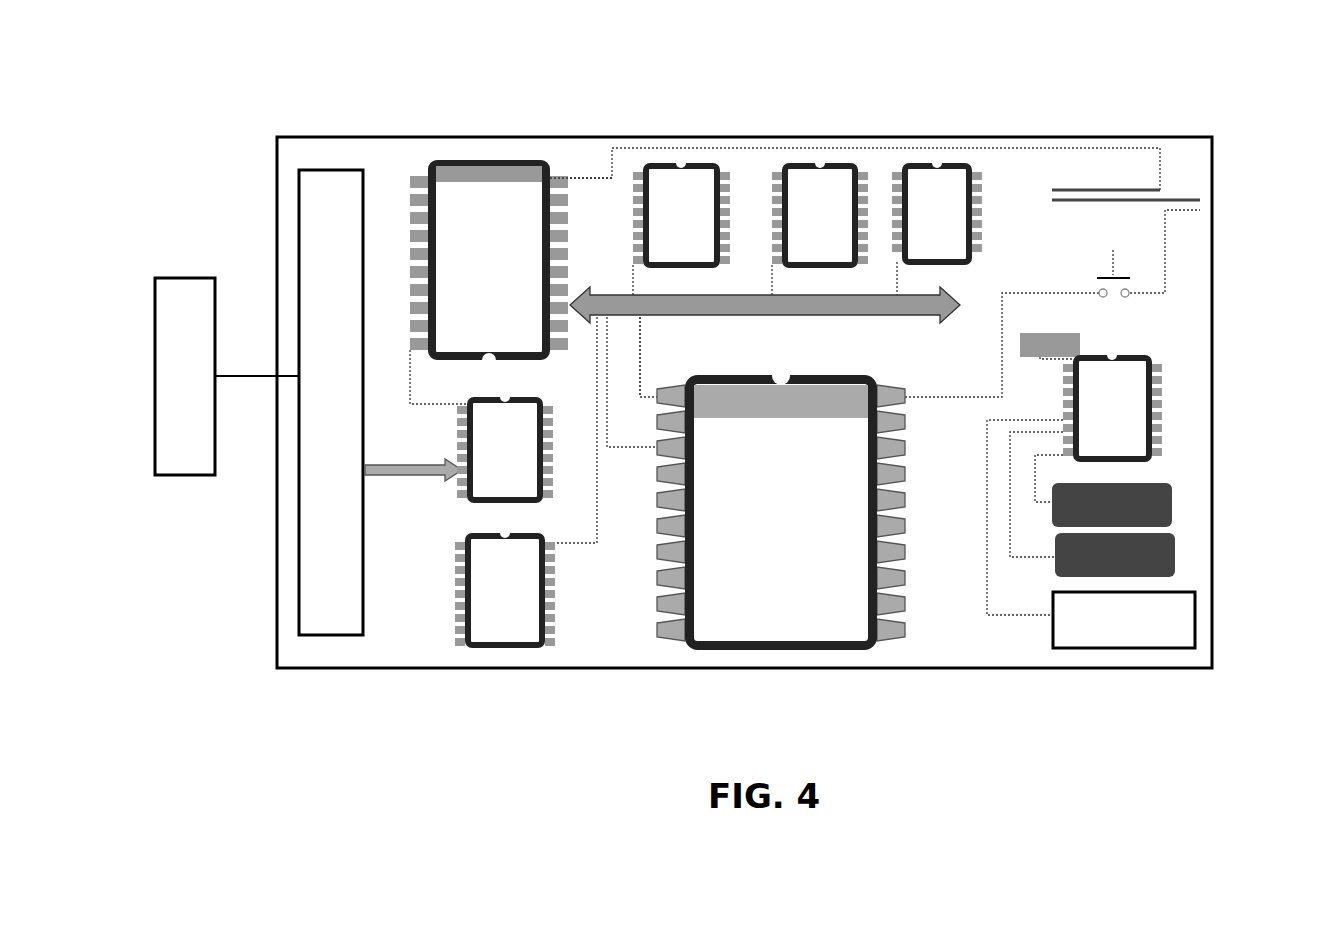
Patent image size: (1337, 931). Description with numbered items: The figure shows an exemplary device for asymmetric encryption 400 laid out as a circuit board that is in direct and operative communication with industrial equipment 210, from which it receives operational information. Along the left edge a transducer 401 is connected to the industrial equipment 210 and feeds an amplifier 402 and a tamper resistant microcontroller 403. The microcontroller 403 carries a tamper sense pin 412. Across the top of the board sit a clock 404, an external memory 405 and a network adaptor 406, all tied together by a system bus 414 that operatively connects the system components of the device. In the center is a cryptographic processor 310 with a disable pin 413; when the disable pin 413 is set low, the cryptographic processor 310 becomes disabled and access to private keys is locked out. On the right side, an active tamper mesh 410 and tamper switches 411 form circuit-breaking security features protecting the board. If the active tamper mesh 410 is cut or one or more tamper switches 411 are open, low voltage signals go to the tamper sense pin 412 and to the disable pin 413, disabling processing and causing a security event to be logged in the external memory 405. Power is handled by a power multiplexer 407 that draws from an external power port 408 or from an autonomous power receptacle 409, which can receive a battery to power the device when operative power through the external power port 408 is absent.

The secure payment board system 400 is at (1243, 82).
The transducer 401 is at (332, 170).
The industrial equipment 210 is at (185, 277).
The tamper resistant microcontroller 403 is at (505, 275).
The tamper sense pin 412 is at (562, 176).
The clock 404 is at (697, 225).
The external memory 405 is at (838, 225).
The network adaptor 406 is at (952, 225).
The system bus 414 is at (855, 317).
The amplifier 402 is at (512, 456).
The active tamper mesh 410 is at (518, 598).
The tamper switches 411 is at (1130, 276).
The cryptographic processor 310 is at (790, 528).
The disable pin 413 is at (643, 400).
The power multiplexer 407 is at (1132, 415).
The autonomous power receptacle 409 is at (1175, 503).
The external power port 408 is at (1147, 630).